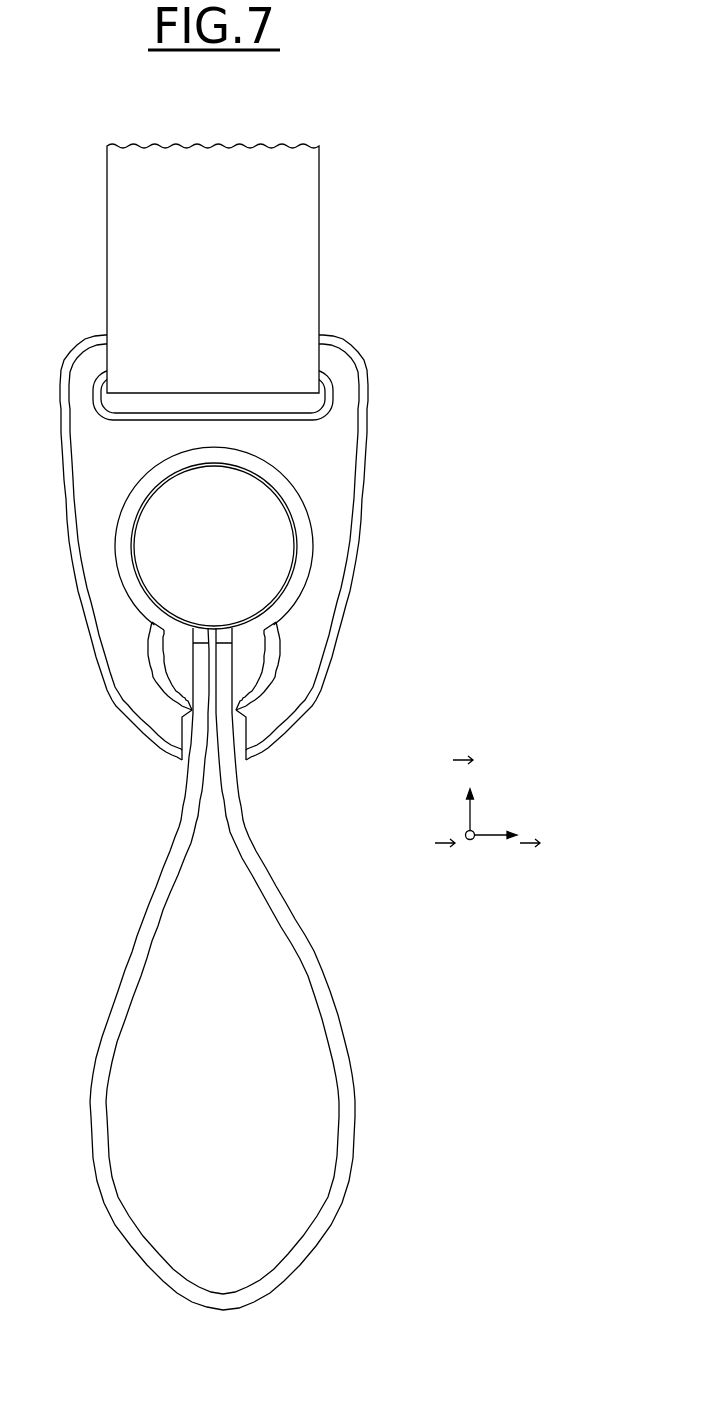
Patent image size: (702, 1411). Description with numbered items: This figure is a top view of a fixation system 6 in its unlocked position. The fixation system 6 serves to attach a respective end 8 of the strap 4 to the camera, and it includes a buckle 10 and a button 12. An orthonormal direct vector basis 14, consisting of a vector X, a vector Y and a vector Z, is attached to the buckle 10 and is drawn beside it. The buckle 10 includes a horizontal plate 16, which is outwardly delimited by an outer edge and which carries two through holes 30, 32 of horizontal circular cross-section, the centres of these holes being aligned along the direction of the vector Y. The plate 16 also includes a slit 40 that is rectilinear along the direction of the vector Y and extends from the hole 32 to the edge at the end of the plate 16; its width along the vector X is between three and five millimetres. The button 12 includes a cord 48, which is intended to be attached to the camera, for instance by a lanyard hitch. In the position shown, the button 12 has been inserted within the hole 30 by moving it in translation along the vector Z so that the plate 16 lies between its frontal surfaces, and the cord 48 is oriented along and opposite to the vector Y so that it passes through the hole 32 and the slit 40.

The strap 4 is at (210, 227).
The fixation system 6 is at (308, 727).
The end 8 is at (294, 383).
The buckle 10 is at (248, 567).
The button 12 is at (267, 580).
The orthonormal direct vector basis 14 is at (519, 770).
The horizontal plate 16 is at (246, 384).
The through hole 30 is at (276, 581).
The through hole 32 is at (243, 684).
The slit 40 is at (194, 741).
The cord 48 is at (297, 929).